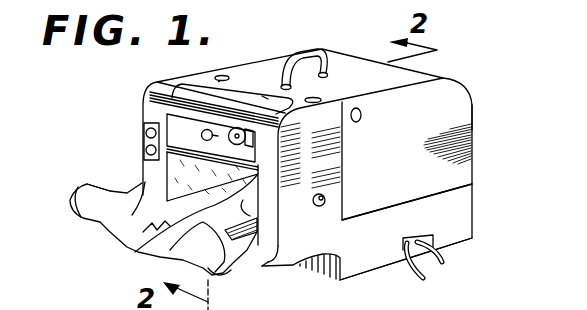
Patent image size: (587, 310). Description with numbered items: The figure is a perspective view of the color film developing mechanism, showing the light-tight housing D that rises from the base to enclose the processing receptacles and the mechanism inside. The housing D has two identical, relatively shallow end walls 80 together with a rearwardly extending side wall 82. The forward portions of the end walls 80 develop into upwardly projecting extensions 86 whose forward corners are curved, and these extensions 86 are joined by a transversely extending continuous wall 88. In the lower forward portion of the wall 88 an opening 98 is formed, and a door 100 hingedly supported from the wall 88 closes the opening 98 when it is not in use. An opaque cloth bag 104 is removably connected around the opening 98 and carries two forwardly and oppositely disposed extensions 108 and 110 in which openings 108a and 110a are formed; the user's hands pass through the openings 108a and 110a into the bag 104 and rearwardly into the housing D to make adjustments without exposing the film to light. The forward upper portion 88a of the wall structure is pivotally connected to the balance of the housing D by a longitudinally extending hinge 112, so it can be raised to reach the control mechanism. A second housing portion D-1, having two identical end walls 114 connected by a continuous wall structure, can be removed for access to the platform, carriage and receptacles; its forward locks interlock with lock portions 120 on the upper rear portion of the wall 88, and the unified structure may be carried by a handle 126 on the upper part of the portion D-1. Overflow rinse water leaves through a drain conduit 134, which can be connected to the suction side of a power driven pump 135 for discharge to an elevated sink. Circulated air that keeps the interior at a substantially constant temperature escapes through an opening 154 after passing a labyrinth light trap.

The end wall 80 is at (398, 235).
The rearward side wall 82 is at (473, 183).
The extension 86 is at (142, 108).
The continuous wall 88 is at (267, 166).
The forward upper portion of the wall structure 88a is at (237, 103).
The opening 98 is at (248, 215).
The door 100 is at (268, 262).
The opaque cloth bag 104 is at (166, 229).
The extension 108 is at (214, 268).
The opening 108a is at (231, 265).
The extension 110 is at (92, 216).
The opening 110a is at (68, 208).
The hinge 112 is at (264, 98).
The end wall 114 is at (424, 173).
The lock portion 120 is at (224, 74).
The handle 126 is at (316, 56).
The drain conduit 134 is at (440, 255).
The power driven pump 135 is at (413, 275).
The opening 154 is at (326, 199).
The light-tight housing D is at (468, 212).
The second housing portion D-1 is at (473, 118).